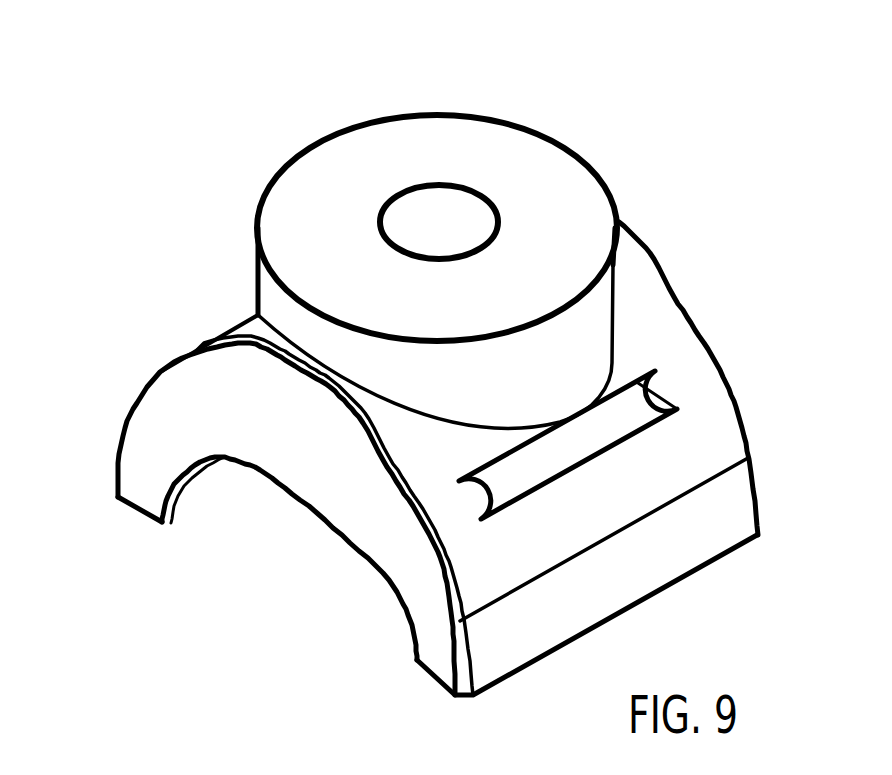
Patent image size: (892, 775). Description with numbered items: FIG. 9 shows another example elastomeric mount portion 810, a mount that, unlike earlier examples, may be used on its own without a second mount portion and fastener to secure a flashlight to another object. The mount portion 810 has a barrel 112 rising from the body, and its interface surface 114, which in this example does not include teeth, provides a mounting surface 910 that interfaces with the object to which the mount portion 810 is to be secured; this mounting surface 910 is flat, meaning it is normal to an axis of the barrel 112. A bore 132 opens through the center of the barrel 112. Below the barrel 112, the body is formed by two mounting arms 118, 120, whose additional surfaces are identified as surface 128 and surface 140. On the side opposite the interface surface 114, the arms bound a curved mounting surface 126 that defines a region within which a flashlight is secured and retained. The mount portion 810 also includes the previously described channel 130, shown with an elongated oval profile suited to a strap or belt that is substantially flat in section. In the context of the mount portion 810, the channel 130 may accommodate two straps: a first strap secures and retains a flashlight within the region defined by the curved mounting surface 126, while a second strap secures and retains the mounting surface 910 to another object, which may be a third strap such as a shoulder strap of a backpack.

The elastomeric mount portion 810 is at (681, 114).
The mounting surface 910 is at (565, 266).
The barrel 112 is at (278, 298).
The interface surface 114 is at (510, 147).
The bore 132 is at (435, 225).
The mounting arm 120 is at (147, 430).
The surface of mounting arm 140 is at (275, 431).
The curved mounting surface 126 is at (205, 492).
The mounting arm 118 is at (428, 615).
The surface of mounting arm 128 is at (663, 339).
The channel 130 is at (571, 450).